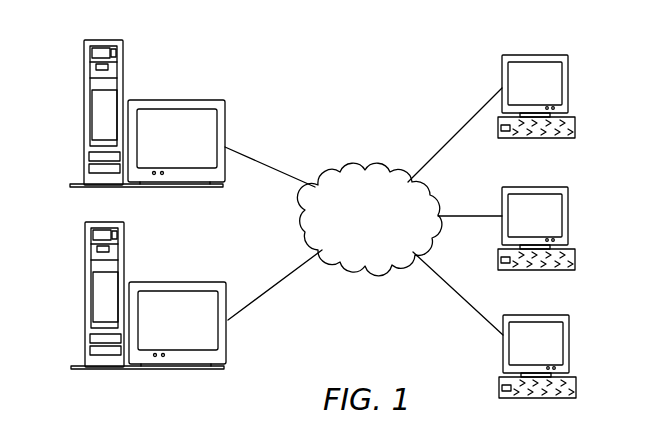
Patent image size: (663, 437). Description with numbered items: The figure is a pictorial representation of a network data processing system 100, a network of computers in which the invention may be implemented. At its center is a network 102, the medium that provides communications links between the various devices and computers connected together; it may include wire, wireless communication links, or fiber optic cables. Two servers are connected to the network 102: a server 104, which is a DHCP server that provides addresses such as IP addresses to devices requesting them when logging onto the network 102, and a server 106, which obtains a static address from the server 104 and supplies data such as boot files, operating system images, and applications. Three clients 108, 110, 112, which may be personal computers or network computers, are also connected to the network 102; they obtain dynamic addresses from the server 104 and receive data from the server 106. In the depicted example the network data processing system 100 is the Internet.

The network data processing system 100 is at (399, 65).
The network 102 is at (345, 171).
The server 104 is at (84, 113).
The server 106 is at (84, 293).
The client 108 is at (568, 83).
The client 110 is at (570, 213).
The client 112 is at (570, 348).